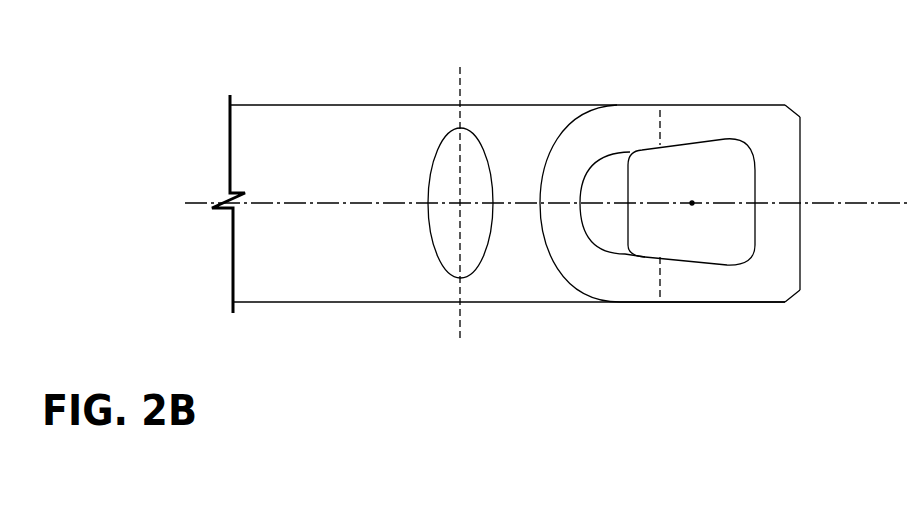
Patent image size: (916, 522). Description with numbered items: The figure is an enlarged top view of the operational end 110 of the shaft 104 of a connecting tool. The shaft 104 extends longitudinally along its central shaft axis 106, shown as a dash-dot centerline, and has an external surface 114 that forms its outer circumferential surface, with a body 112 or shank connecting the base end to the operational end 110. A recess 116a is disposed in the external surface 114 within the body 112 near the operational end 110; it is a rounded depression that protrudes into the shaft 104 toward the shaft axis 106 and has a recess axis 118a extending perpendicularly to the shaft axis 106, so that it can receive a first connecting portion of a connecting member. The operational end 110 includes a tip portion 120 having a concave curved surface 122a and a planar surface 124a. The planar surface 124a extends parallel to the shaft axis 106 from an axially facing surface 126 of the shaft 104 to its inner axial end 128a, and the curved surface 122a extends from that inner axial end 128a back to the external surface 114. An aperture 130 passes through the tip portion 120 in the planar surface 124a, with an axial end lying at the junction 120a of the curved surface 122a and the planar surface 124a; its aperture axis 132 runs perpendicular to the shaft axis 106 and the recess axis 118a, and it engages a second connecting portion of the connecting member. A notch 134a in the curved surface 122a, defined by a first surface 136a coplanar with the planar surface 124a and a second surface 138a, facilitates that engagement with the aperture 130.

The shaft 104 is at (258, 308).
The shaft axis 106 is at (280, 203).
The operational end 110 is at (375, 92).
The body 112 is at (267, 105).
The external surface 114 is at (343, 242).
The recess 116a is at (449, 180).
The recess axis 118a is at (460, 78).
The tip portion 120 is at (753, 323).
The junction 120a is at (653, 308).
The curved surface 122a is at (575, 155).
The planar surface 124a is at (782, 158).
The axially facing surface 126 is at (800, 223).
The inner axial end 128a is at (658, 132).
The aperture 130 is at (722, 162).
The aperture axis 132 is at (692, 203).
The notch 134a is at (612, 225).
The first surface 136a is at (620, 216).
The second surface 138a is at (585, 213).